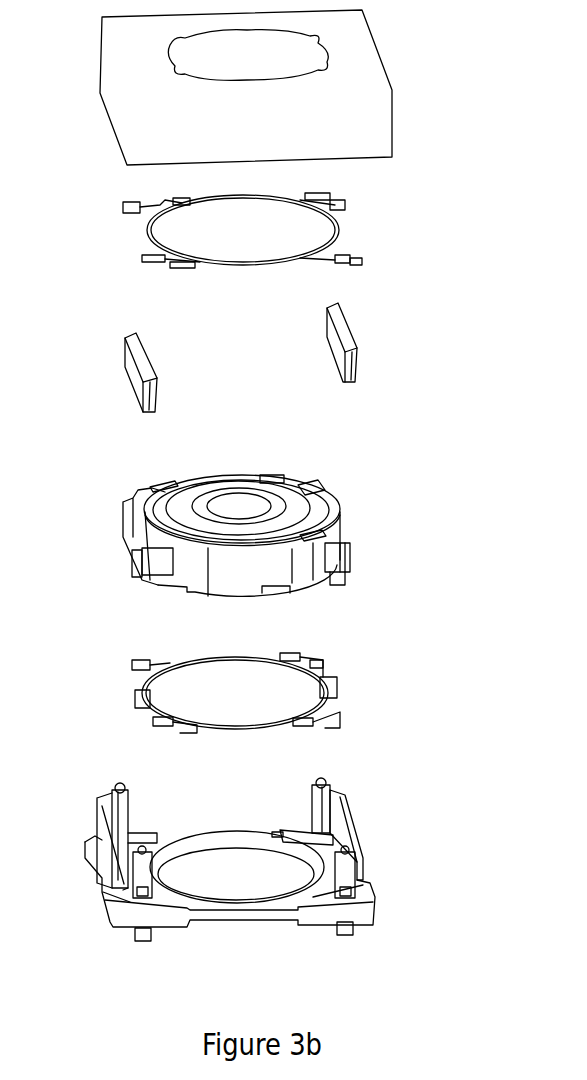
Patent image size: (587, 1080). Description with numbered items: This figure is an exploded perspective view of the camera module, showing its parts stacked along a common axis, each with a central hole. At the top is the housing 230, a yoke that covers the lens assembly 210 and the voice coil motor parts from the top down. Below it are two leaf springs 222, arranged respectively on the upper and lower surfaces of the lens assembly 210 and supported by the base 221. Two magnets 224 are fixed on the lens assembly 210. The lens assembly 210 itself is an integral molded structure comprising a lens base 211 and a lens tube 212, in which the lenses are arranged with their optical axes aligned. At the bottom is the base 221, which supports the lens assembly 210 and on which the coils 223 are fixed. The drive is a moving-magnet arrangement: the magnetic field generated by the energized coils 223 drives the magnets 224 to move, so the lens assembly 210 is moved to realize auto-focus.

The housing 230 is at (372, 67).
The leaf springs 222 is at (337, 218).
The magnets 224 is at (343, 340).
The lens assembly 210 is at (331, 529).
The lens tube 212 is at (290, 493).
The lens base 211 is at (307, 557).
The base 221 is at (360, 888).
The coils 223 is at (110, 817).